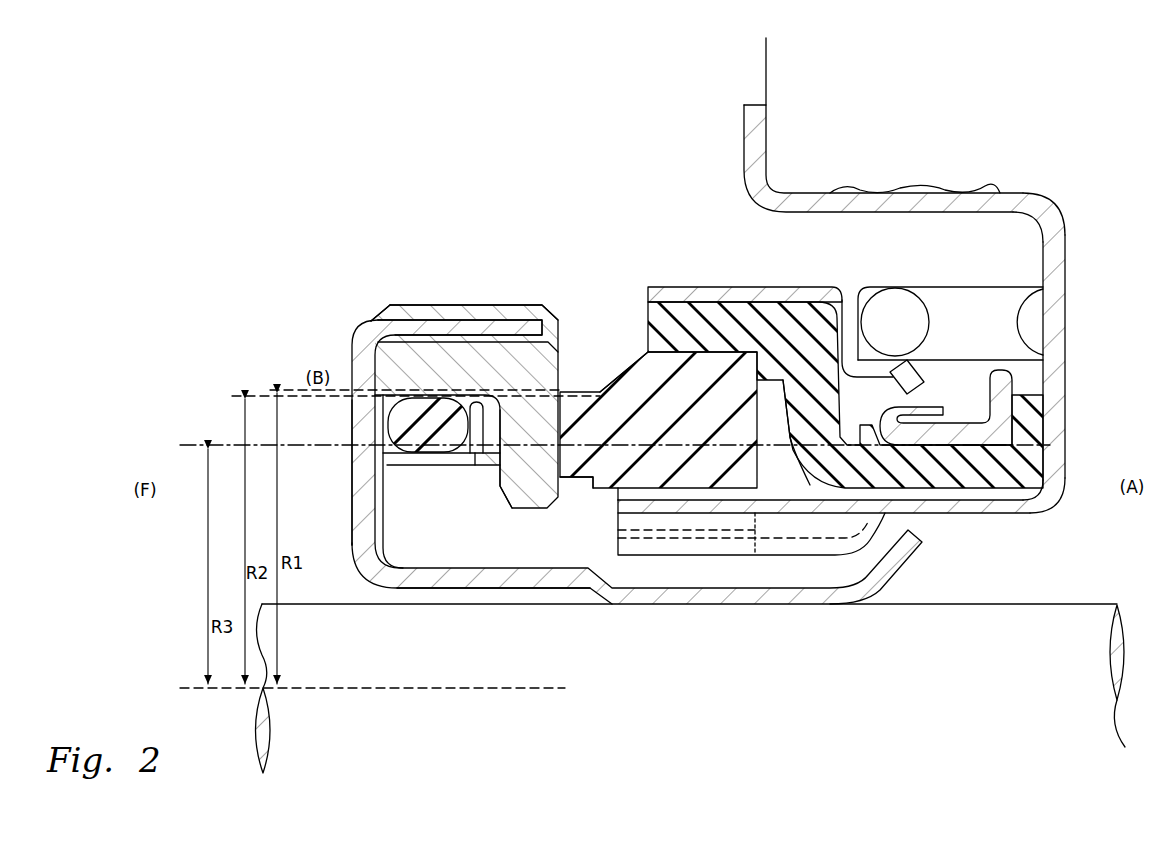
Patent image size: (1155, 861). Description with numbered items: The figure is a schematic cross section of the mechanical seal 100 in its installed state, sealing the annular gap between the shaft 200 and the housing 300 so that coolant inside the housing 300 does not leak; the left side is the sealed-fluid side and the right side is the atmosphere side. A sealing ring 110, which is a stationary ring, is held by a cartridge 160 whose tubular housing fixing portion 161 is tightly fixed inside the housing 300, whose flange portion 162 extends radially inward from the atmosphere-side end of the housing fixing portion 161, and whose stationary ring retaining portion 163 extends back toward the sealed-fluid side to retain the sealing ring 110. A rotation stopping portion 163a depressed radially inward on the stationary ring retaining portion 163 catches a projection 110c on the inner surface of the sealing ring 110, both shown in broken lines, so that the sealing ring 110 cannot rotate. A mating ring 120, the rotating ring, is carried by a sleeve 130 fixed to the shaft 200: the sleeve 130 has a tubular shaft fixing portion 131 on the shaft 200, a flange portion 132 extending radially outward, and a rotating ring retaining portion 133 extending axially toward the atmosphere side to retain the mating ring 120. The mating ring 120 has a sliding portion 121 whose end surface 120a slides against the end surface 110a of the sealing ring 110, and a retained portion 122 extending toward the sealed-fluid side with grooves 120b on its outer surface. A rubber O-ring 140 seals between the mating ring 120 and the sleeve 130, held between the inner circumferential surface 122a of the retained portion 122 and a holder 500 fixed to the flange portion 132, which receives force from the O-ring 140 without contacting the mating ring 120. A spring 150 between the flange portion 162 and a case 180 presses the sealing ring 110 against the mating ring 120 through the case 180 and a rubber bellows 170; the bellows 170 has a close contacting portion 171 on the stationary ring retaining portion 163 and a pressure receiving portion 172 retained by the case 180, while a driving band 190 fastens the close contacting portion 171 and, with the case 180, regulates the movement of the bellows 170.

The mechanical seal 100 is at (503, 240).
The sealing ring 110 is at (600, 388).
The end surface of the sealing ring 110a is at (562, 391).
The projection 110c is at (707, 513).
The mating ring 120 is at (535, 303).
The end surface of the mating ring 120a is at (607, 495).
The grooves 120b is at (475, 405).
The sliding portion 121 is at (518, 455).
The retained portion 122 is at (397, 345).
The inner circumferential surface of the retained portion 122a is at (368, 331).
The sleeve 130 is at (348, 458).
The shaft fixing portion 131 is at (668, 606).
The flange portion 132 is at (357, 530).
The rotating ring retaining portion 133 is at (432, 330).
The O-ring 140 is at (445, 432).
The spring 150 is at (948, 285).
The cartridge 160 is at (801, 192).
The housing fixing portion 161 is at (993, 203).
The flange portion 162 is at (1067, 287).
The stationary ring retaining portion 163 is at (677, 520).
The rotation stopping portion 163a is at (788, 542).
The rubber bellows 170 is at (1025, 488).
The close contacting portion 171 is at (942, 490).
The pressure receiving portion 172 is at (795, 393).
The case 180 is at (700, 285).
The driving band 190 is at (950, 426).
The shaft 200 is at (691, 688).
The housing 300 is at (883, 115).
The holder 500 is at (428, 469).